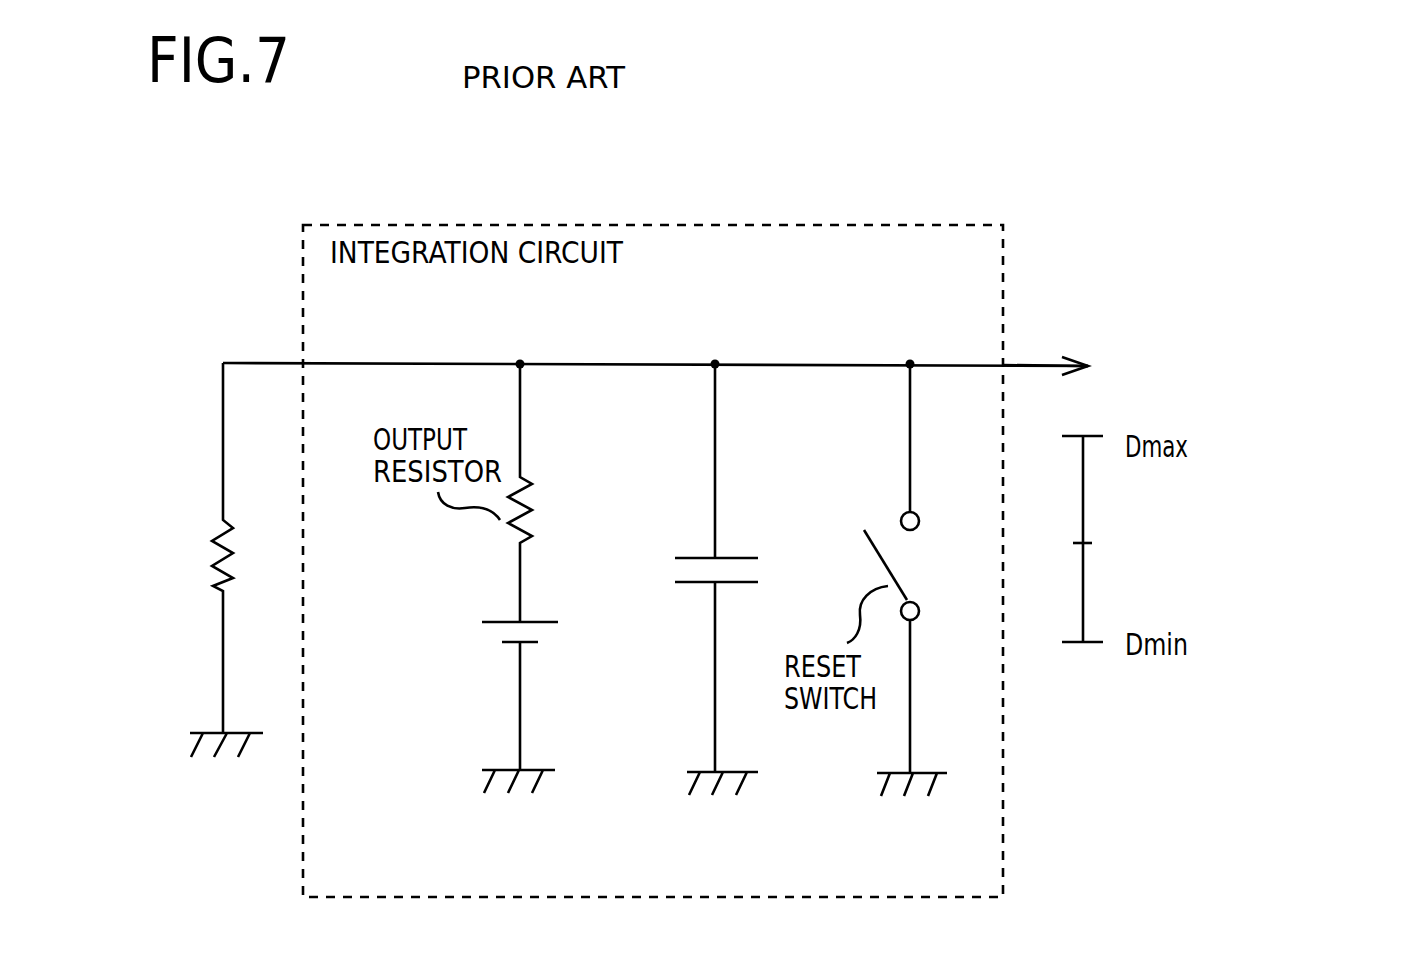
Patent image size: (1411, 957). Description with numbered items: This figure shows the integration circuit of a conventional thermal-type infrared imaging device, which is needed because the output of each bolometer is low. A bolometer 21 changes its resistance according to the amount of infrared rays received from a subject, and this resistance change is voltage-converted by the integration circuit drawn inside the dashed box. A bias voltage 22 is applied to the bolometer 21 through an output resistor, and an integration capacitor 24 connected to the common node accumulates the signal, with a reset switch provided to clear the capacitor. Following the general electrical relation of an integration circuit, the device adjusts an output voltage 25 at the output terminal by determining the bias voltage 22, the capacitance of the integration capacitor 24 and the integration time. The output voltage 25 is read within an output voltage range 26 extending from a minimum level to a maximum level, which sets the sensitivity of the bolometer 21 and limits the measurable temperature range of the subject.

The bolometer 21 is at (212, 552).
The bias voltage 22 is at (490, 637).
The integration capacitor 24 is at (687, 553).
The output voltage 25 is at (1123, 310).
The output voltage range 26 is at (1087, 567).